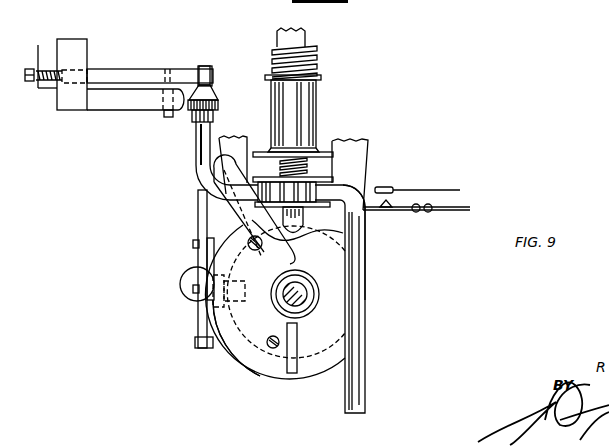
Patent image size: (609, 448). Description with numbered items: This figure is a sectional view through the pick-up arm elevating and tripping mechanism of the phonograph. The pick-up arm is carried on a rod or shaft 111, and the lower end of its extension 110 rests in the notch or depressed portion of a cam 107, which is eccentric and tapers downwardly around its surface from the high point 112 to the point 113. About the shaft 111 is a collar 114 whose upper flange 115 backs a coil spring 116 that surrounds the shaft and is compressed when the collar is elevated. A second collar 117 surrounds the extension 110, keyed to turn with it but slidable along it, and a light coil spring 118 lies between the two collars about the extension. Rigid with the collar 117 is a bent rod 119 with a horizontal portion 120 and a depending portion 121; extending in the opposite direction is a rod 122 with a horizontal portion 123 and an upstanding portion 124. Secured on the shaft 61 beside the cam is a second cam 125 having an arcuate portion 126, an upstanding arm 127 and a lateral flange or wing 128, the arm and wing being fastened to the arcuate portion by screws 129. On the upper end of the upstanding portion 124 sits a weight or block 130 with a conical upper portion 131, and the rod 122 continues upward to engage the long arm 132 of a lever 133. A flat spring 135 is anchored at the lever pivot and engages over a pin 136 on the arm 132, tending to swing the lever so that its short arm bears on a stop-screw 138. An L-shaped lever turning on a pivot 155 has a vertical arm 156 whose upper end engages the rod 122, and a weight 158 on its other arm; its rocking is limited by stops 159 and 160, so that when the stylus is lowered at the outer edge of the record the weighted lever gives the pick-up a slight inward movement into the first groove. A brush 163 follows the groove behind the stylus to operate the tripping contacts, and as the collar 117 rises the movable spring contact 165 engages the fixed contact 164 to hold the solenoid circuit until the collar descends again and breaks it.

The shaft 61 is at (300, 305).
The cam 107 is at (330, 262).
The extension 110 is at (300, 226).
The rod or shaft 111 is at (300, 33).
The high point 112 is at (200, 216).
The point 113 is at (343, 232).
The collar 114 is at (318, 100).
The upper flange 115 is at (322, 77).
The coil spring 116 is at (318, 52).
The second collar 117 is at (310, 168).
The light coil spring 118 is at (334, 153).
The bent rod 119 is at (370, 333).
The horizontal portion 120 is at (336, 178).
The depending portion 121 is at (366, 298).
The rod 122 is at (193, 152).
The horizontal portion 123 is at (250, 187).
The upstanding portion 124 is at (196, 132).
The second cam 125 is at (235, 354).
The arcuate portion 126 is at (228, 345).
The upstanding arm 127 is at (205, 181).
The lateral flange or wing 128 is at (292, 374).
The screws 129 is at (257, 251).
The weight or block 130 is at (218, 108).
The conical upper portion 131 is at (213, 90).
The long arm 132 is at (117, 72).
The lever 133 is at (98, 64).
The flat spring 135 is at (99, 101).
The pin 136 is at (167, 113).
The stop-screw 138 is at (29, 68).
The pivot 155 is at (194, 289).
The vertical arm 156 is at (199, 229).
The weight 158 is at (181, 280).
The stop 159 is at (193, 244).
The stop 160 is at (196, 343).
The brush 163 is at (459, 198).
The fixed contact 164 is at (394, 189).
The movable spring contact 165 is at (405, 211).